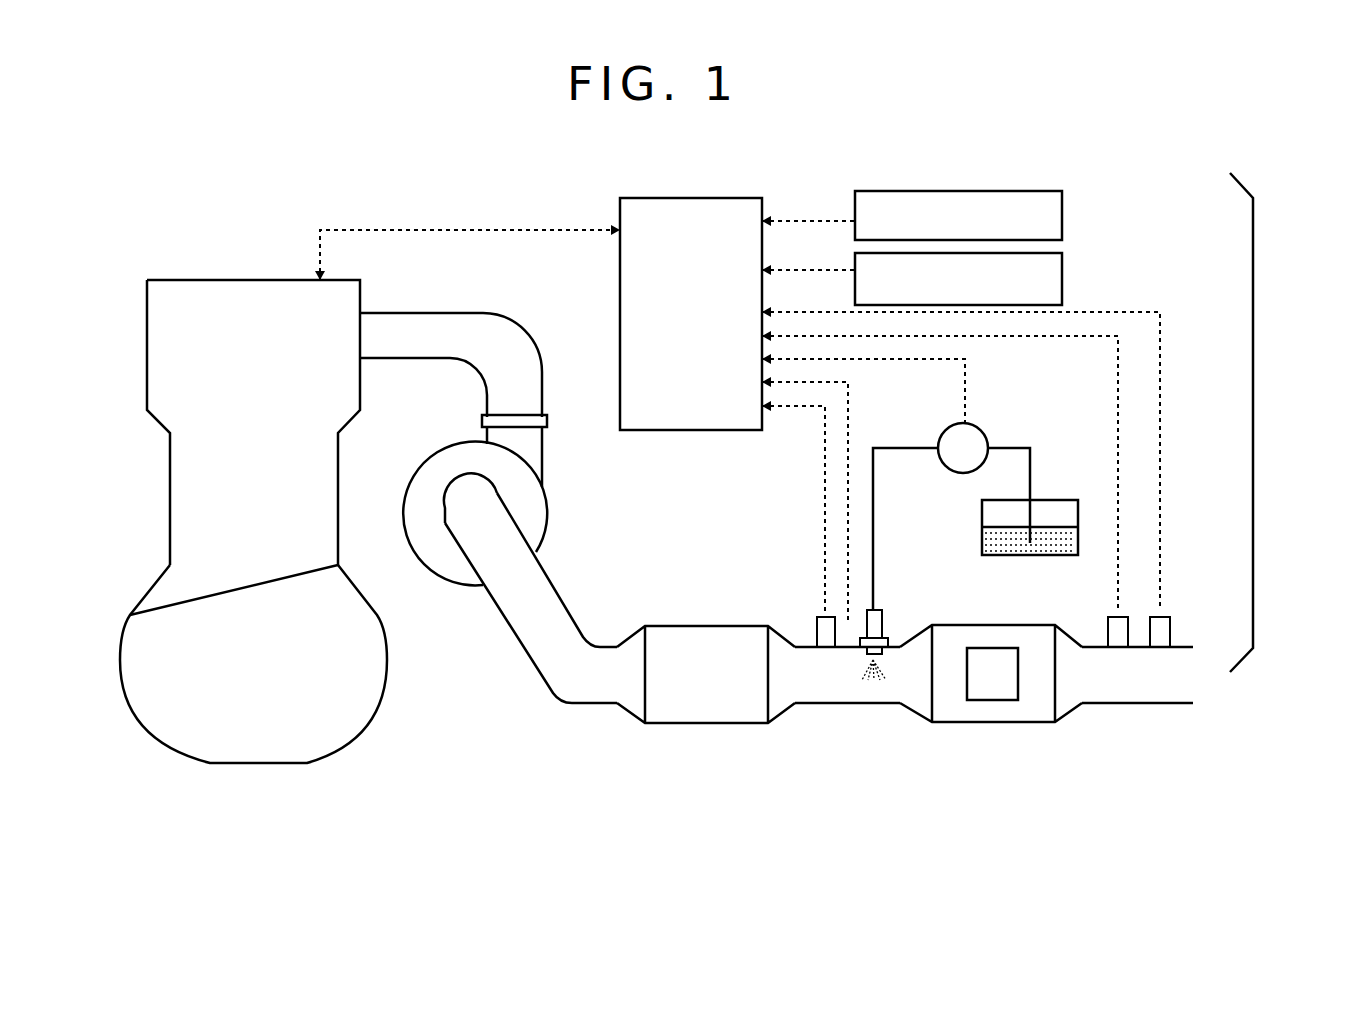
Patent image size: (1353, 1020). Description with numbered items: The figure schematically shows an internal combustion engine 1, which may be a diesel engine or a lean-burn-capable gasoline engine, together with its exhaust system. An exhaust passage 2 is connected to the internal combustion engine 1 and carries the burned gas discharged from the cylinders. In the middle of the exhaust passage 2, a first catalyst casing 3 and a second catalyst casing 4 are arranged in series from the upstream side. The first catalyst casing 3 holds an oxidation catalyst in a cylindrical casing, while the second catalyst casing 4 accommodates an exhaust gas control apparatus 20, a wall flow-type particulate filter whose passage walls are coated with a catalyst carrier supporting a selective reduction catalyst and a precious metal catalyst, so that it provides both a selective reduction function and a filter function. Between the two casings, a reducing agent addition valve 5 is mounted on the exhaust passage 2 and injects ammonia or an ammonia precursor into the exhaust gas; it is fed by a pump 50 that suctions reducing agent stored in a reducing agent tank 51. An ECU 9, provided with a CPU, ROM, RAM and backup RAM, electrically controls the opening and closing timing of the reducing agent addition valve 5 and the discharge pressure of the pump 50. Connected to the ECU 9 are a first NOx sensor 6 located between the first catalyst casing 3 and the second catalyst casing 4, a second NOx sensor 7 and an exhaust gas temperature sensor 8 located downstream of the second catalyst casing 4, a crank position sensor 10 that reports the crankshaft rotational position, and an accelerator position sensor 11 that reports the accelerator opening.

The internal combustion engine 1 is at (215, 280).
The exhaust passage 2 is at (486, 313).
The first catalyst casing 3 is at (690, 626).
The second catalyst casing 4 is at (1010, 722).
The reducing agent addition valve 5 is at (884, 608).
The first NOx sensor 6 is at (813, 612).
The second NOx sensor 7 is at (1105, 625).
The exhaust gas temperature sensor 8 is at (1172, 625).
The electronic control unit (ECU) 9 is at (710, 198).
The crank position sensor 10 is at (1062, 271).
The accelerator position sensor 11 is at (1062, 221).
The exhaust gas control apparatus 20 is at (1256, 402).
The pump 50 is at (983, 432).
The reducing agent tank 51 is at (1065, 500).